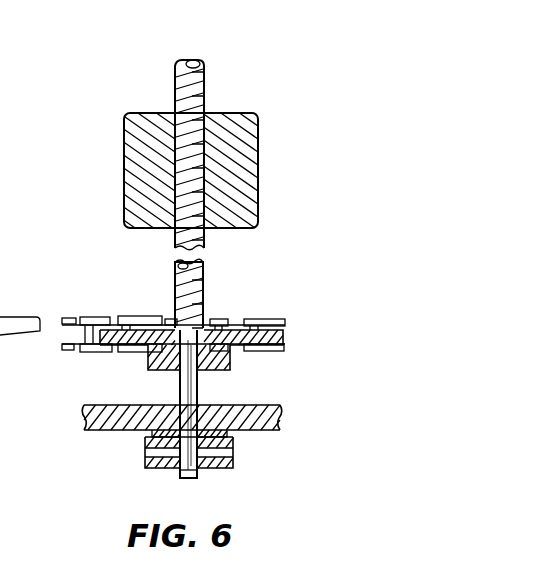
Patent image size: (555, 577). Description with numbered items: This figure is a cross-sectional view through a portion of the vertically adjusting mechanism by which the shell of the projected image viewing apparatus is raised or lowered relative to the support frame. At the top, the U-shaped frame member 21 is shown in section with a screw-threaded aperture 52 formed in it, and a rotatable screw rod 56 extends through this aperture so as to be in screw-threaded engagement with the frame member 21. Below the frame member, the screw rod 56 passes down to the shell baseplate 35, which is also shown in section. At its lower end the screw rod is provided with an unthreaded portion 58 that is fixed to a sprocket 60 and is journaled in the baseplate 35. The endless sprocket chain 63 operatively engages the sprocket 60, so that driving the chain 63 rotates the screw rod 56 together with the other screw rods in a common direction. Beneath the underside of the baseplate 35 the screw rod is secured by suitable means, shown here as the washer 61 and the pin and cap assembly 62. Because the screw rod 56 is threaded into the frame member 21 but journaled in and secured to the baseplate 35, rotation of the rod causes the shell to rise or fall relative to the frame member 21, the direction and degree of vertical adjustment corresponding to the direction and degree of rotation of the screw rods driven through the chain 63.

The U-shaped frame member 21 is at (124, 133).
The screw rod 56 is at (200, 72).
The screw-threaded aperture 52 is at (204, 112).
The endless sprocket chain 63 is at (262, 322).
The sprocket 60 is at (284, 337).
The baseplate 35 is at (84, 406).
The washer 61 is at (240, 432).
The pin and cap assembly 62 is at (234, 460).
The unthreaded portion 58 is at (189, 474).